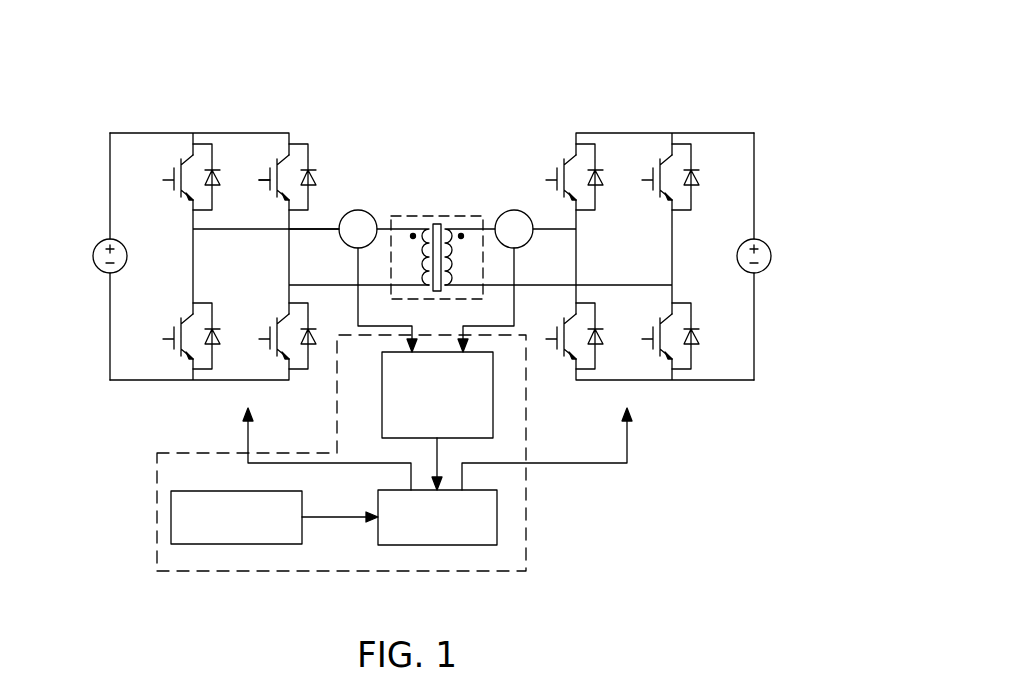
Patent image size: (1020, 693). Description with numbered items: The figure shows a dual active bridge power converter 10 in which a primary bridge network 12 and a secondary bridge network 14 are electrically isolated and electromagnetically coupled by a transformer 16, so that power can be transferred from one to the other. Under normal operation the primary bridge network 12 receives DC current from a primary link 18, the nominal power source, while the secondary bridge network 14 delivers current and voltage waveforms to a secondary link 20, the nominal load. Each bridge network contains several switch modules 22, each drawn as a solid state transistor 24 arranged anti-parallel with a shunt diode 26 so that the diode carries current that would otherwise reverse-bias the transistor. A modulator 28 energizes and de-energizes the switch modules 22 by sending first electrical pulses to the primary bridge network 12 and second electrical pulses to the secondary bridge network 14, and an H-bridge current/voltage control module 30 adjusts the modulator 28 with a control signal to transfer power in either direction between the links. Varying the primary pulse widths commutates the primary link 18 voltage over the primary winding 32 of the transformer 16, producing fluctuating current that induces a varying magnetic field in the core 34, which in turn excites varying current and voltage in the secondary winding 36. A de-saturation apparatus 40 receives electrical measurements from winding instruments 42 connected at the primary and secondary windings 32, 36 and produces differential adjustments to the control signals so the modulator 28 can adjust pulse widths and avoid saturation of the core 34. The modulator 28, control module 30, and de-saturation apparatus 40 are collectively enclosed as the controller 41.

The dual active bridge power converter 10 is at (427, 67).
The primary bridge network 12 is at (242, 123).
The secondary bridge network 14 is at (628, 125).
The transformer 16 is at (480, 214).
The primary link 18 is at (110, 182).
The secondary link 20 is at (757, 182).
The switch module 22 is at (322, 165).
The solid state transistor 24 is at (268, 192).
The shunt diode 26 is at (345, 212).
The modulator 28 is at (497, 517).
The H-bridge current/voltage control module 30 is at (243, 545).
The primary winding 32 is at (420, 257).
The core 34 is at (436, 222).
The secondary winding 36 is at (458, 272).
The de-saturation apparatus 40 is at (493, 415).
The controller 41 is at (528, 562).
The winding instrument 42 is at (380, 214).